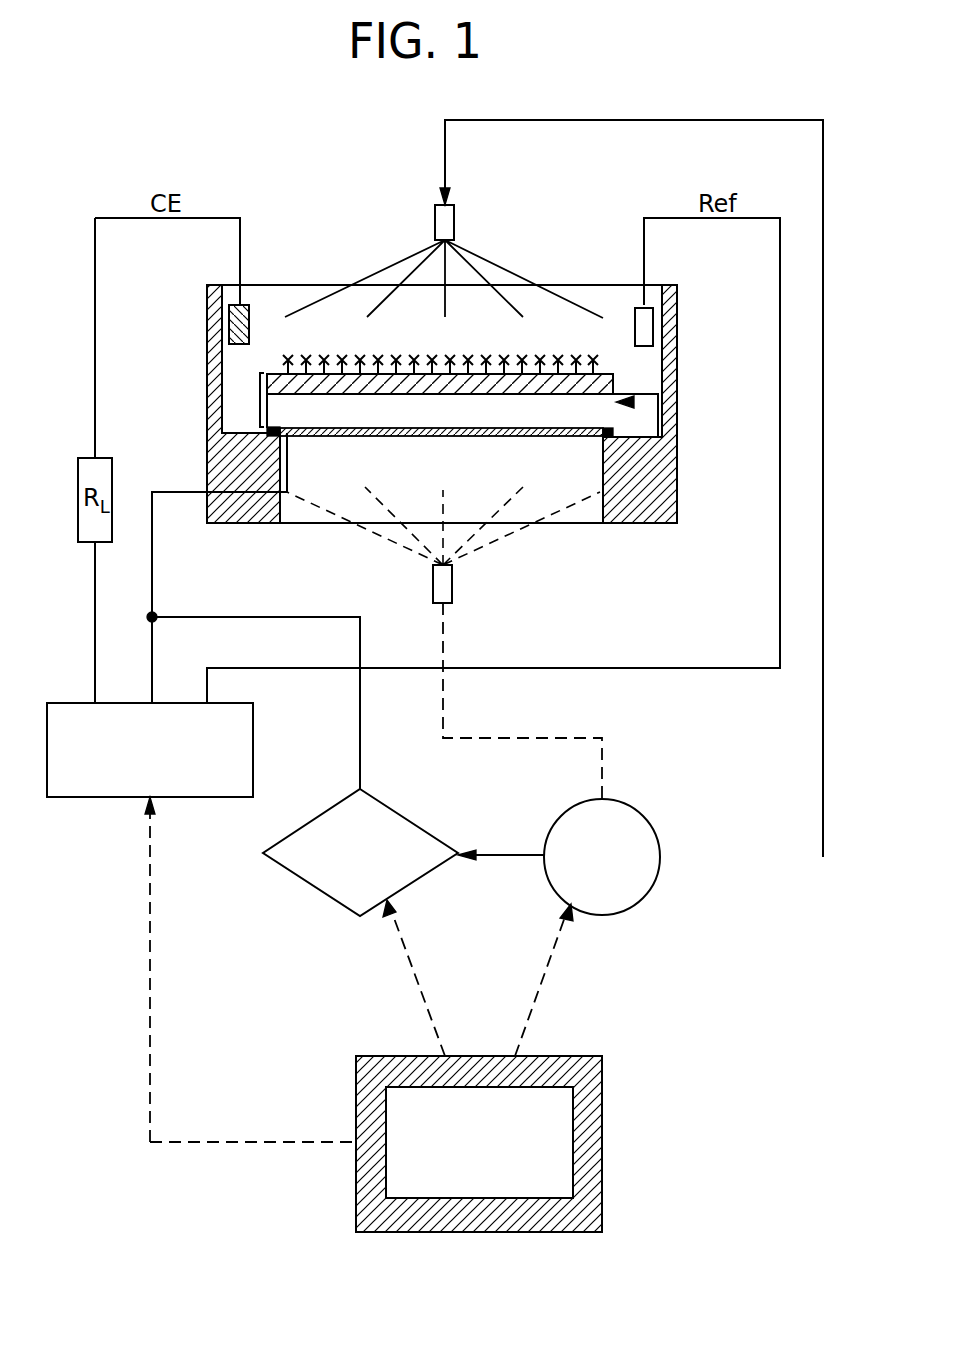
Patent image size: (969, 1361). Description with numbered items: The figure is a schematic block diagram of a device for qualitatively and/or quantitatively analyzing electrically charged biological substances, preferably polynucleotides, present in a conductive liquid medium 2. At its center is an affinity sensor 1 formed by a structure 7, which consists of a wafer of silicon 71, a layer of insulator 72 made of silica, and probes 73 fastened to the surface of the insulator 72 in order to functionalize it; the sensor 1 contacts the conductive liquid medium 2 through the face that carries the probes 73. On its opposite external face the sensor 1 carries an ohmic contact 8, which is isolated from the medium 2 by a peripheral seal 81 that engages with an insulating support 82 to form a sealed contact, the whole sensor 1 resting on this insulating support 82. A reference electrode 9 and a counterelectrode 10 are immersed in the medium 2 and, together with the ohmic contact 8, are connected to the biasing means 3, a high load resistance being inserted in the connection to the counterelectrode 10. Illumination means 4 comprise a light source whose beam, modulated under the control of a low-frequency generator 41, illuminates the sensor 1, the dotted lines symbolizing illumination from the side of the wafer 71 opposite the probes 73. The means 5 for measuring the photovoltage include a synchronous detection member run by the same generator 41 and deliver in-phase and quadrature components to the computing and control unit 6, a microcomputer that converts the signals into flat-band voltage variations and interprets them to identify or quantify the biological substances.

The affinity sensor 1 is at (634, 402).
The conductive liquid medium 2 is at (276, 315).
The biasing means 3 is at (85, 797).
The illumination means 4 is at (454, 230).
The low-frequency generator 41 is at (640, 812).
The means for measuring Vph 5 is at (310, 888).
The computing and control unit 6 is at (602, 1142).
The structure Sc/Is-Pr 7 is at (450, 362).
The wafer of silicon 71 is at (600, 424).
The layer of insulator 72 is at (615, 380).
The probes 73 is at (592, 340).
The ohmic contact 8 is at (396, 499).
The peripheral seal 81 is at (265, 432).
The insulating support 82 is at (233, 523).
The reference electrode 9 is at (653, 322).
The counterelectrode 10 is at (229, 326).